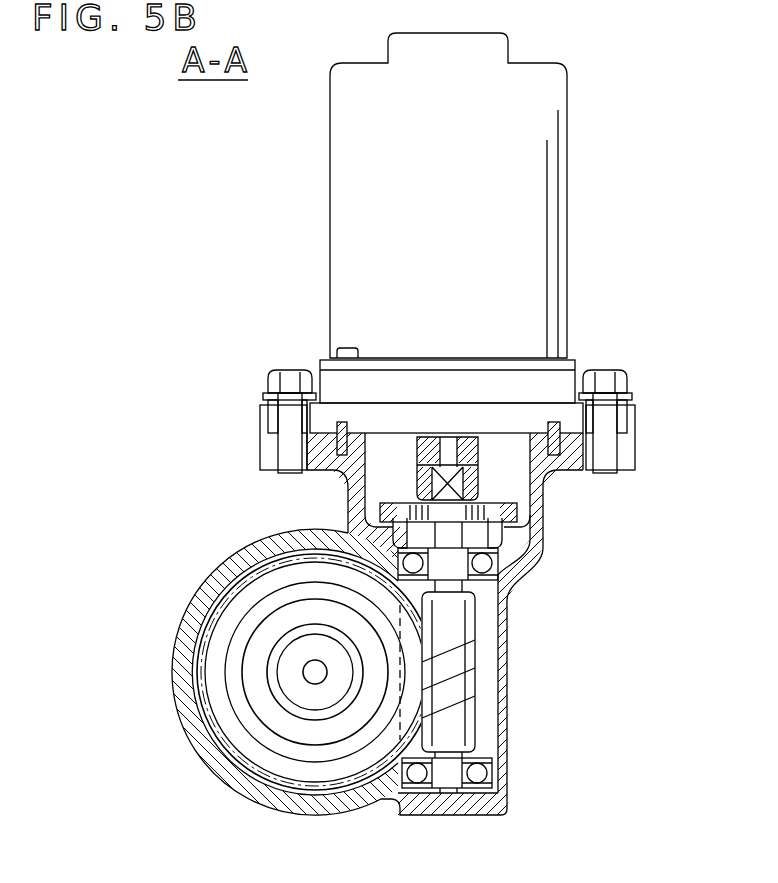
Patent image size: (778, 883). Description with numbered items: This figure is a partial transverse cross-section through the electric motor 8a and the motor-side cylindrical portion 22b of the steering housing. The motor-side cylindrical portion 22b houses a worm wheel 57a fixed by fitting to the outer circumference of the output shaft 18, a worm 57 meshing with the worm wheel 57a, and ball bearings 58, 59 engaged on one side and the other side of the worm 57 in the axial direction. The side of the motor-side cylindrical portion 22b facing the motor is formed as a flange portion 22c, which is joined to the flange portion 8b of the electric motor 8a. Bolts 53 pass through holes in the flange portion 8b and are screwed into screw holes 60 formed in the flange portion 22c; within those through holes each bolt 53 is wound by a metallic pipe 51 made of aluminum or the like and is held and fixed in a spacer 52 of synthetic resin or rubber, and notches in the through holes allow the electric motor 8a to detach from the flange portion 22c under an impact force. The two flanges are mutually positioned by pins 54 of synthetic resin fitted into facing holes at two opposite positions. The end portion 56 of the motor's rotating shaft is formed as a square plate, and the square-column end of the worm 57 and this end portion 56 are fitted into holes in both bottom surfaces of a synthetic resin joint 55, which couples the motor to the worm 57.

The electric motor 8a is at (567, 94).
The flange portion of the electric motor 8b is at (392, 412).
The motor-side cylindrical portion 22b is at (207, 577).
The flange portion of the motor-side cylindrical portion 22c is at (262, 458).
The worm wheel 57a is at (182, 640).
The output shaft 18 is at (272, 693).
The bolt 53 is at (281, 370).
The spacer 52 is at (266, 393).
The metallic pipe 51 is at (262, 427).
The screw hole 60 is at (262, 466).
The pin 54 is at (340, 480).
The end portion of the rotating shaft 56 is at (447, 437).
The joint 55 is at (532, 488).
The worm 57 is at (457, 532).
The ball bearing 58 is at (498, 572).
The ball bearing 59 is at (488, 772).